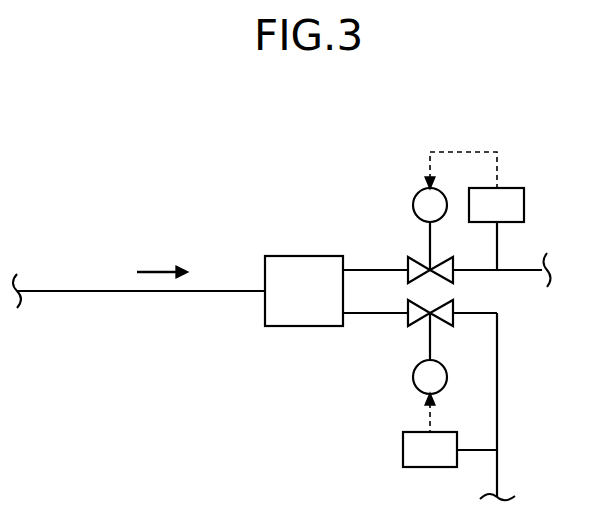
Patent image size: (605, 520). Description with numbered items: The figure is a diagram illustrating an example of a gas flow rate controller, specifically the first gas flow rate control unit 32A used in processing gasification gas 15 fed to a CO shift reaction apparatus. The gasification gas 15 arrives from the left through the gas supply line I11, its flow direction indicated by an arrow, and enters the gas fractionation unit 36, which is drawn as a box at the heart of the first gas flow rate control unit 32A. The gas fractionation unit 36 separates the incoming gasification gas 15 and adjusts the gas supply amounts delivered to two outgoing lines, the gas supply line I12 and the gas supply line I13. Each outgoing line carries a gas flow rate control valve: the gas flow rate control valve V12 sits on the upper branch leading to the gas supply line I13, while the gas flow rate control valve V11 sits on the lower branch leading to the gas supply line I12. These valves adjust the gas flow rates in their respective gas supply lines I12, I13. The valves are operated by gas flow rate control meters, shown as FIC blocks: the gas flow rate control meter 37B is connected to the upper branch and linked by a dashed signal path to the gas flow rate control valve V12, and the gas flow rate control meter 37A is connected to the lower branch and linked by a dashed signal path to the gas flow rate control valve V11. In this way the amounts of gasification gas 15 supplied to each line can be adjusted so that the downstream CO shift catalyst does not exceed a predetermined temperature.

The gasification gas 15 is at (154, 271).
The first gas flow rate control unit 32A is at (283, 248).
The gas fractionation unit 36 is at (302, 256).
The gas flow rate control valve V12 is at (413, 205).
The gas flow rate control valve V11 is at (413, 378).
The gas flow rate control meter (FIC) 37B is at (508, 188).
The gas flow rate control meter (FIC) 37A is at (403, 450).
The gas supply line I11 is at (137, 292).
The gas supply line I12 is at (497, 398).
The gas supply line I13 is at (523, 271).